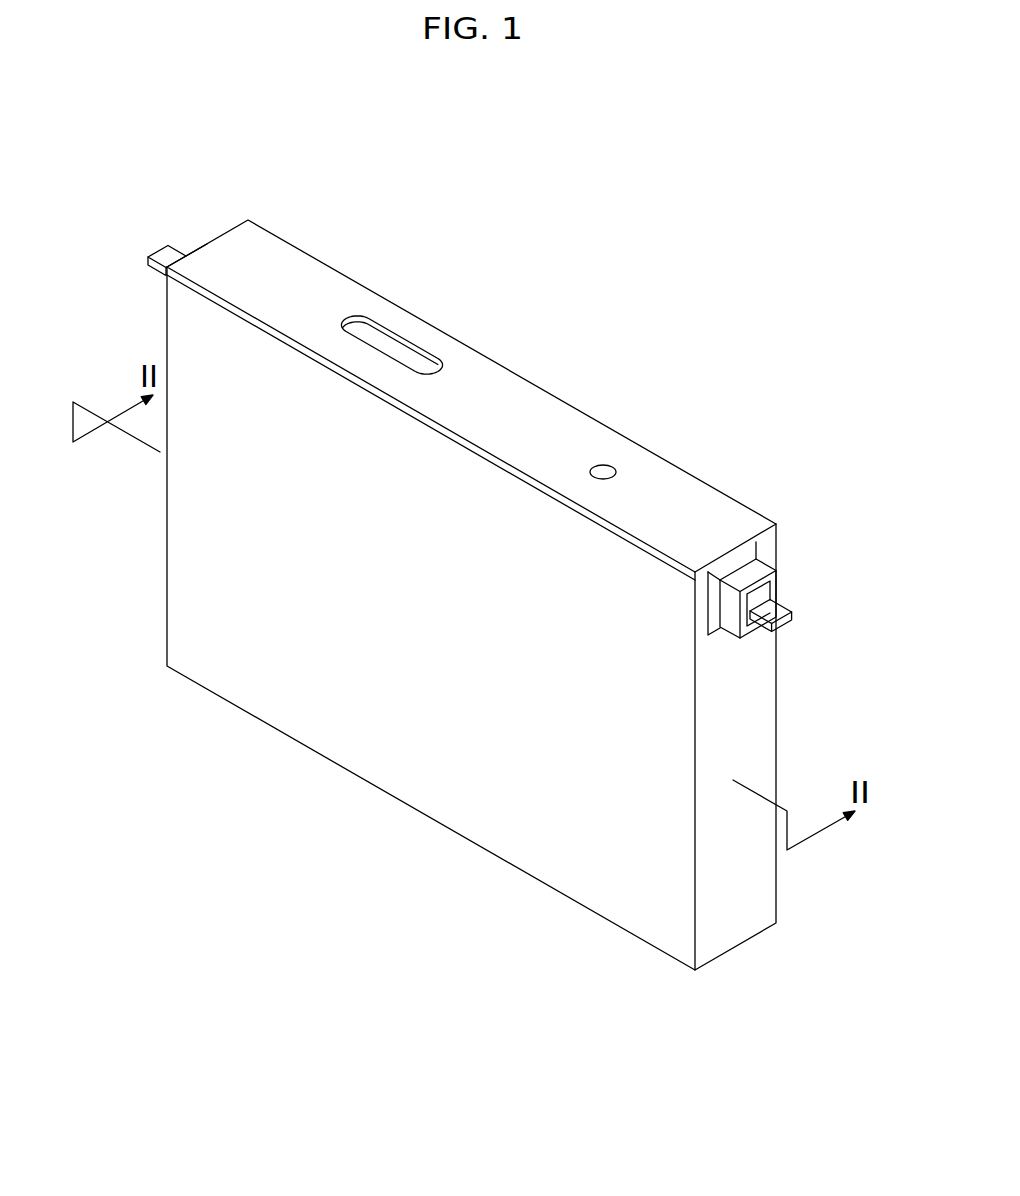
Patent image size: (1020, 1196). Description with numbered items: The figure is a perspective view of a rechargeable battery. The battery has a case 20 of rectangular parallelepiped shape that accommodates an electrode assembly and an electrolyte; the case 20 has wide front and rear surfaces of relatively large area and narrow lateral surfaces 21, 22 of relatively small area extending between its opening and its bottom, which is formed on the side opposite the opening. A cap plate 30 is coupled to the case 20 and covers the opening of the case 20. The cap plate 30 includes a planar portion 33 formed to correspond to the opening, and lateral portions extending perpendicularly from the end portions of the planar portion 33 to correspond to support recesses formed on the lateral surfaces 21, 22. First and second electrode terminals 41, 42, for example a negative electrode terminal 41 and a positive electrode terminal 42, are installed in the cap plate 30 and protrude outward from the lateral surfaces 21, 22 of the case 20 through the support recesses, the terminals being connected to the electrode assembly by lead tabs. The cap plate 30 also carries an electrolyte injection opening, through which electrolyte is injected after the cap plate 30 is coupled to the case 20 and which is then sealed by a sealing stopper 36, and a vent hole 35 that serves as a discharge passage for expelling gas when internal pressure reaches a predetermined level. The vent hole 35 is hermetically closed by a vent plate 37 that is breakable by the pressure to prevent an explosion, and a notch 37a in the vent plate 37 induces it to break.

The case 20 is at (469, 618).
The lateral surface 21 is at (166, 543).
The lateral surface 22 is at (764, 877).
The cap plate 30 is at (471, 400).
The planar portion 33 is at (490, 395).
The vent hole 35 is at (406, 307).
The sealing stopper 36 is at (604, 464).
The vent plate 37 is at (391, 307).
The notch 37a is at (367, 335).
The first electrode terminal 41 is at (160, 226).
The second electrode terminal 42 is at (797, 570).